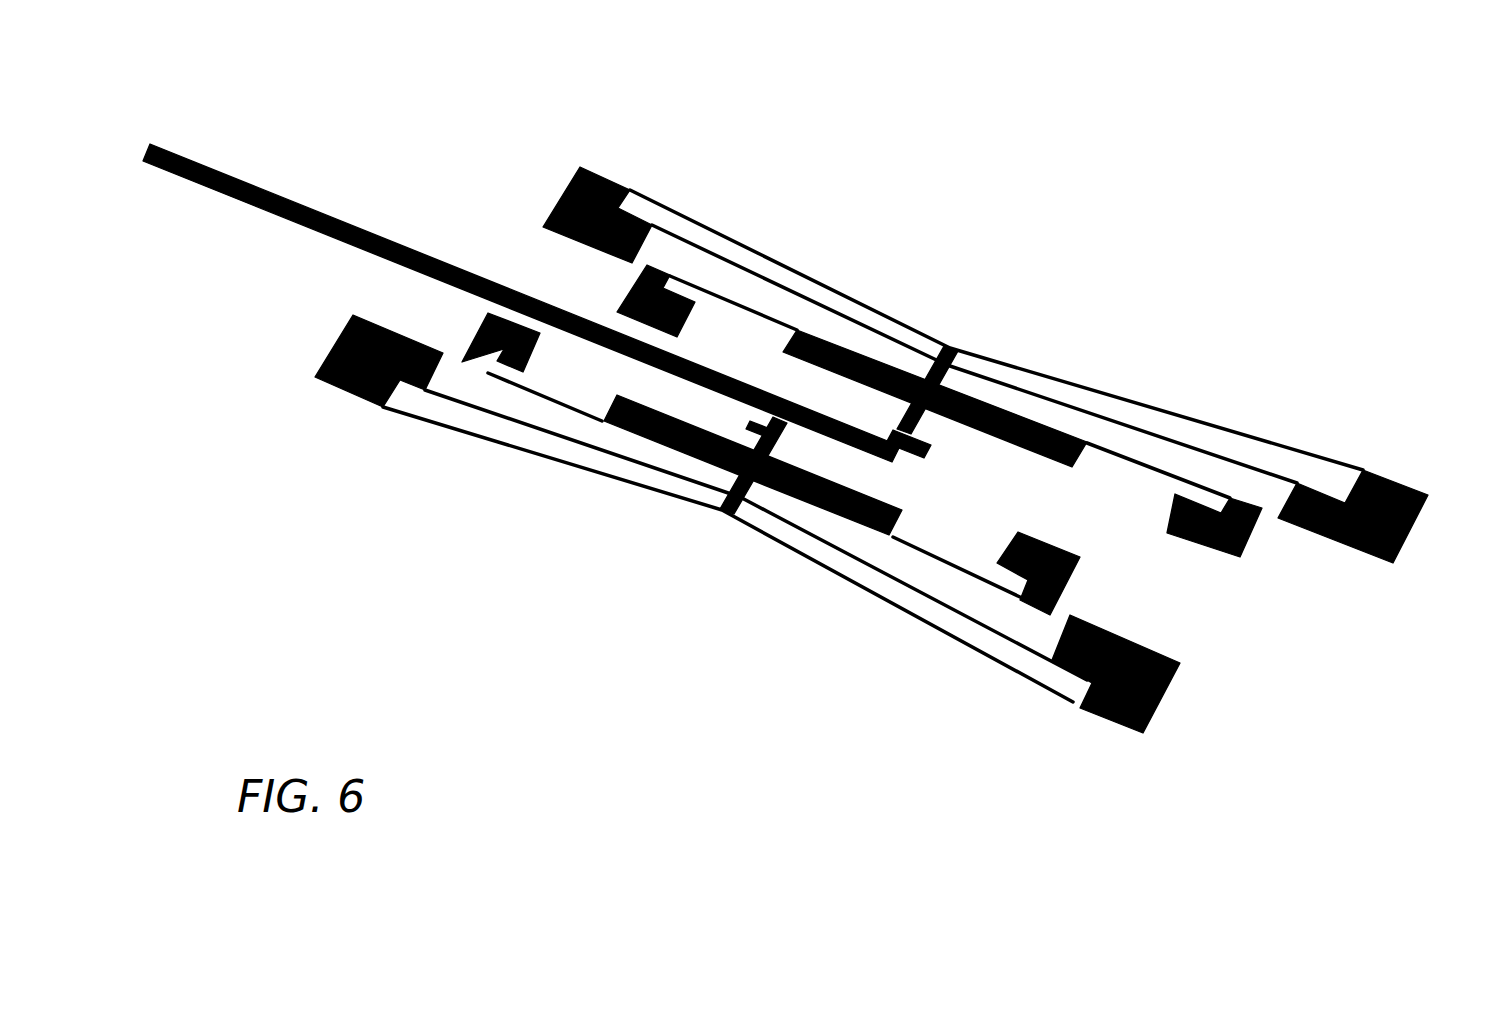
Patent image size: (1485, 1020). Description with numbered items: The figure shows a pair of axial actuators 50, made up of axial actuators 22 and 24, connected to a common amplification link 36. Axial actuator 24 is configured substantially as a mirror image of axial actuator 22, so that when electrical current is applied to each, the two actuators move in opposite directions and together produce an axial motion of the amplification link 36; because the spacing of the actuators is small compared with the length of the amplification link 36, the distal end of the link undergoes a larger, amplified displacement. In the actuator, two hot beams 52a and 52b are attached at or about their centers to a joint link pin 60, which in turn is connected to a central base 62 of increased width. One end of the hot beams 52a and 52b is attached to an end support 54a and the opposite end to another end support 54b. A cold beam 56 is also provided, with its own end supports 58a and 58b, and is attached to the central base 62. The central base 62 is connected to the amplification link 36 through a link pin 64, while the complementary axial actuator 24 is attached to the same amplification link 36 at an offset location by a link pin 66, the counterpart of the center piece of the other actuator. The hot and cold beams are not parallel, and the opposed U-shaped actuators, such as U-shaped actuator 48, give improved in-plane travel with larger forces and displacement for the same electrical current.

The axial actuator 22 is at (919, 203).
The axial actuator 24 is at (612, 604).
The amplification link 36 is at (207, 189).
The U-shaped actuator 48 is at (716, 545).
The pair of axial actuators 50 is at (1021, 214).
The hot beam 52a is at (751, 245).
The hot beam 52b is at (794, 297).
The end support 54a is at (576, 176).
The end support 54b is at (1353, 552).
The cold beam 56 is at (757, 316).
The end support 58a is at (630, 293).
The end support 58b is at (1227, 560).
The joint link pin 60 is at (958, 346).
The central base 62 is at (1045, 456).
The link pin 64 is at (905, 447).
The link pin 66 is at (781, 442).